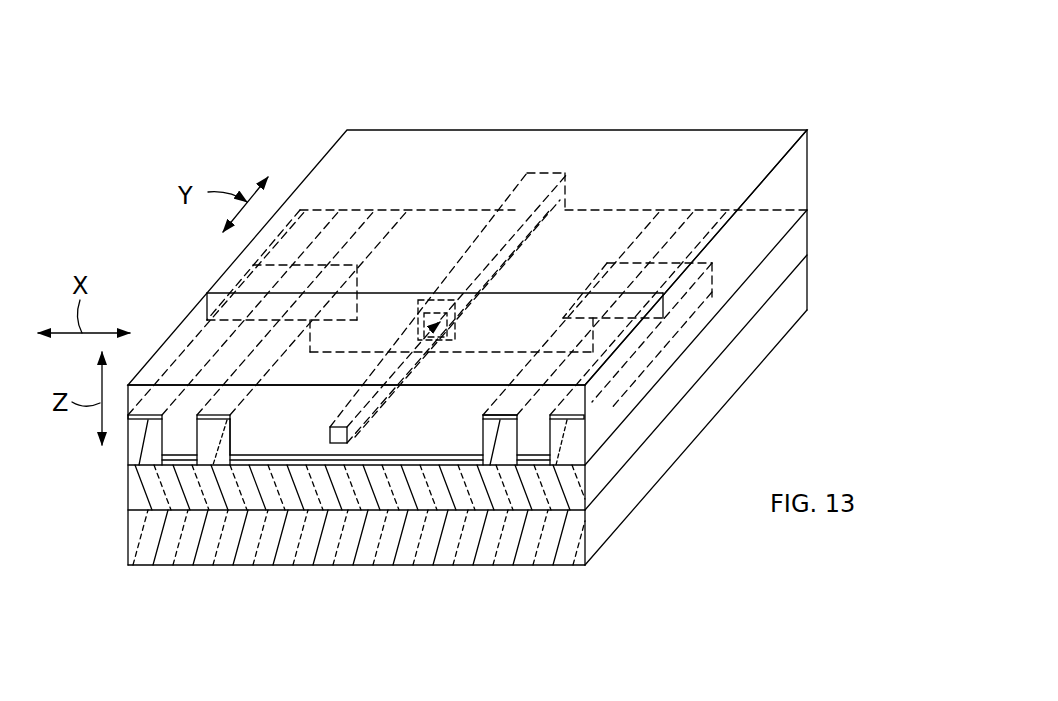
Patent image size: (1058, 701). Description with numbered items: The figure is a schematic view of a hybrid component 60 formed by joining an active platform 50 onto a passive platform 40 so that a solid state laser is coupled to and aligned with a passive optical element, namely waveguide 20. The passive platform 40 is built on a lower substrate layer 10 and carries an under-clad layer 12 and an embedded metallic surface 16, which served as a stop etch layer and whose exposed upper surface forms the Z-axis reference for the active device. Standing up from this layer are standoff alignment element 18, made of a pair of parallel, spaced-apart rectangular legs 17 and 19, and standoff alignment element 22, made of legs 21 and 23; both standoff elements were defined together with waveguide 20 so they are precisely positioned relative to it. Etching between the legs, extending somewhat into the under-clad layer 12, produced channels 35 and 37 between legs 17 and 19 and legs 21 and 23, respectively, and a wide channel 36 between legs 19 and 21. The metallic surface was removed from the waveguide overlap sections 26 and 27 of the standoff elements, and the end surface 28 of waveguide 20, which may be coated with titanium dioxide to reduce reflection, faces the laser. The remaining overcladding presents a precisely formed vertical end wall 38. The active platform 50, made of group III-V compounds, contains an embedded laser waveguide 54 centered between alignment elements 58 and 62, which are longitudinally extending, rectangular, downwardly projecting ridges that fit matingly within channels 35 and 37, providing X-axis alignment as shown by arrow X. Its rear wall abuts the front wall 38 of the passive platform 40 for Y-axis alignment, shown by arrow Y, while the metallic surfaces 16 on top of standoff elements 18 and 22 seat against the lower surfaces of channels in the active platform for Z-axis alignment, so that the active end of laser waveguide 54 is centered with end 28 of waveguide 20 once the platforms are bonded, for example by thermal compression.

The substrate 10 is at (553, 541).
The under-clad layer 12 is at (128, 490).
The metallic surface 16 is at (712, 300).
The leg 17 is at (133, 440).
The standoff alignment element 18 is at (195, 347).
The leg 19 is at (257, 437).
The passive optical element 20 is at (548, 170).
The leg 21 is at (418, 456).
The standoff alignment element 22 is at (507, 405).
The leg 23 is at (600, 436).
The waveguide overlap section 26 is at (303, 263).
The waveguide overlap section 27 is at (663, 262).
The end surface of waveguide 28 is at (530, 290).
The channel 35 is at (160, 466).
The wide channel 36 is at (200, 466).
The channel 37 is at (510, 462).
The vertical end wall 38 is at (368, 293).
The passive platform 40 is at (390, 128).
The active platform 50 is at (187, 300).
The laser waveguide 54 is at (460, 327).
The alignment element 58 is at (165, 463).
The hybrid component 60 is at (853, 212).
The alignment element 62 is at (535, 462).